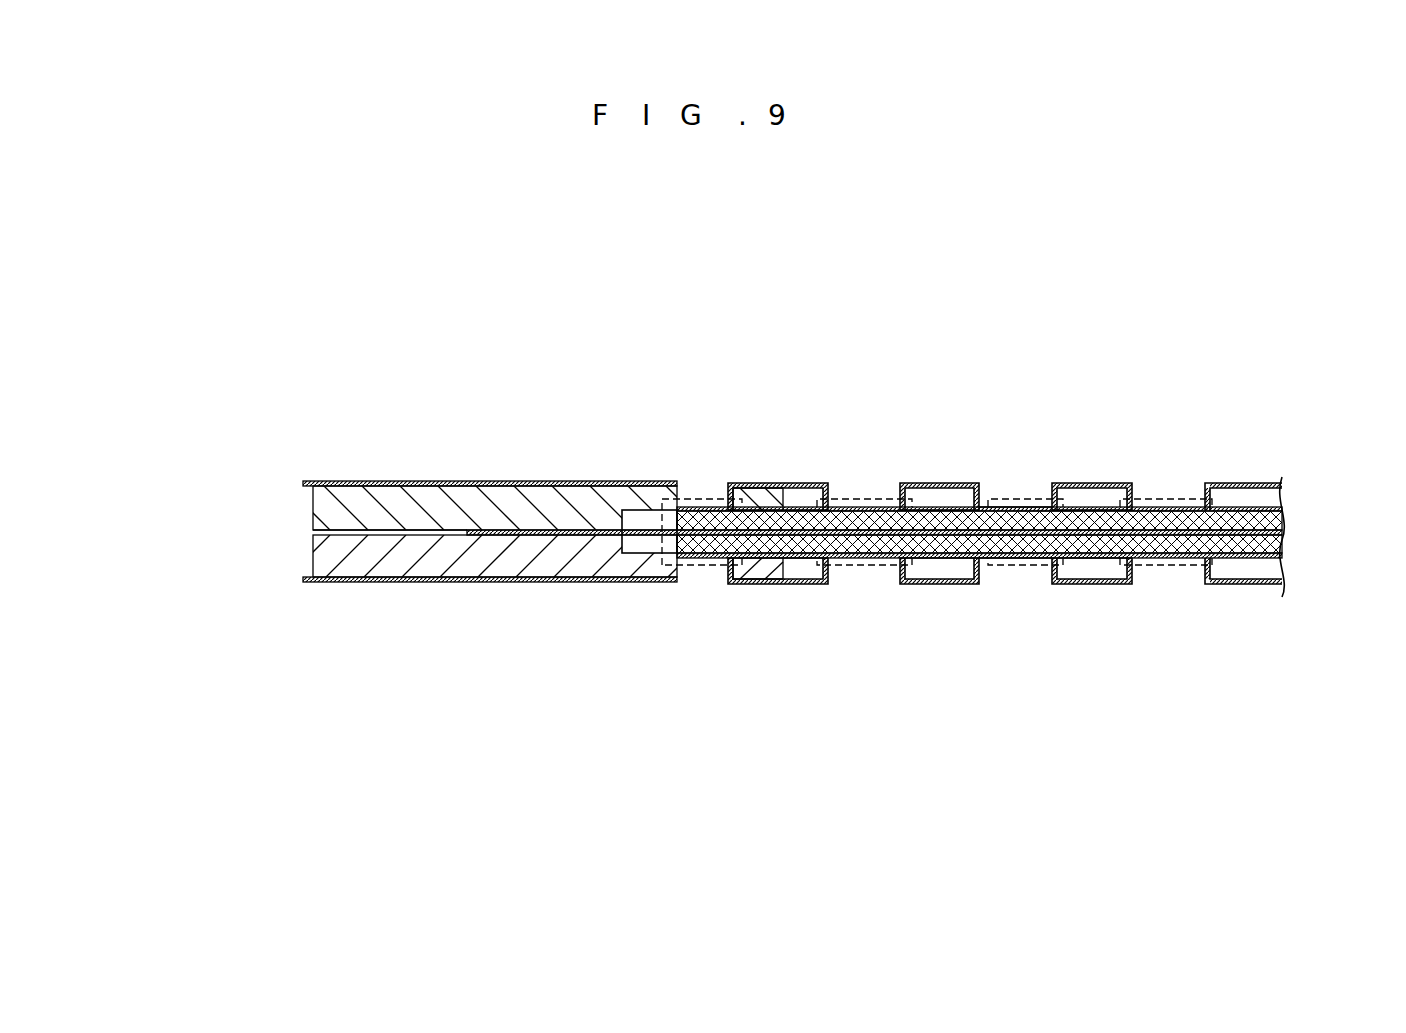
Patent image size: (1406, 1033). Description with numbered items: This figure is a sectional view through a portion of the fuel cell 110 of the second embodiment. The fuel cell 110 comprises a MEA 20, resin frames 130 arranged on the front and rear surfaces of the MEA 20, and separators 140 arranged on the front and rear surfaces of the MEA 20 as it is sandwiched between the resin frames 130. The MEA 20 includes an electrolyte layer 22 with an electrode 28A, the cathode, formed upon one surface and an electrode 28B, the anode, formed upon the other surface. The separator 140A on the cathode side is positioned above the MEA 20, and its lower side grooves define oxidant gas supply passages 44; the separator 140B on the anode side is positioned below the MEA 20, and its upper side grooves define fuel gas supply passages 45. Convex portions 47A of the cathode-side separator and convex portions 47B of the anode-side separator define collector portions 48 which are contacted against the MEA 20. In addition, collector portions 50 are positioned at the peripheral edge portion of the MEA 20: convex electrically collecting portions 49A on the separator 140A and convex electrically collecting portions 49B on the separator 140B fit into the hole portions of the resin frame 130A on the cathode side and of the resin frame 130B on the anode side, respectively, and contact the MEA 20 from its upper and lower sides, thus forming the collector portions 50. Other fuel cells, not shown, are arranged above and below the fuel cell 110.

The separators 140 is at (143, 428).
The separator on the cathode side 140A is at (303, 483).
The separator on the anode side 140B is at (303, 578).
The resin frames 130 is at (238, 483).
The resin frame on the cathode side 130A is at (334, 506).
The resin frame on the anode side 130B is at (334, 548).
The electrolyte layer 22 is at (647, 507).
The fuel cell 110 is at (1292, 532).
The convex electrically collecting portions 49A is at (698, 505).
The convex electrically collecting portions 49B is at (710, 560).
The convex portions of the separator on the cathode side 47A is at (866, 497).
The convex portions of the separator on the anode side 47B is at (866, 563).
The electrode 28A is at (1010, 497).
The electrode 28B is at (1015, 565).
The MEA 20 is at (940, 503).
The oxidant gas supply passages 44 is at (1090, 497).
The fuel gas supply passages 45 is at (1090, 572).
The collector portions 50 is at (690, 574).
The collector portions 48 is at (846, 574).